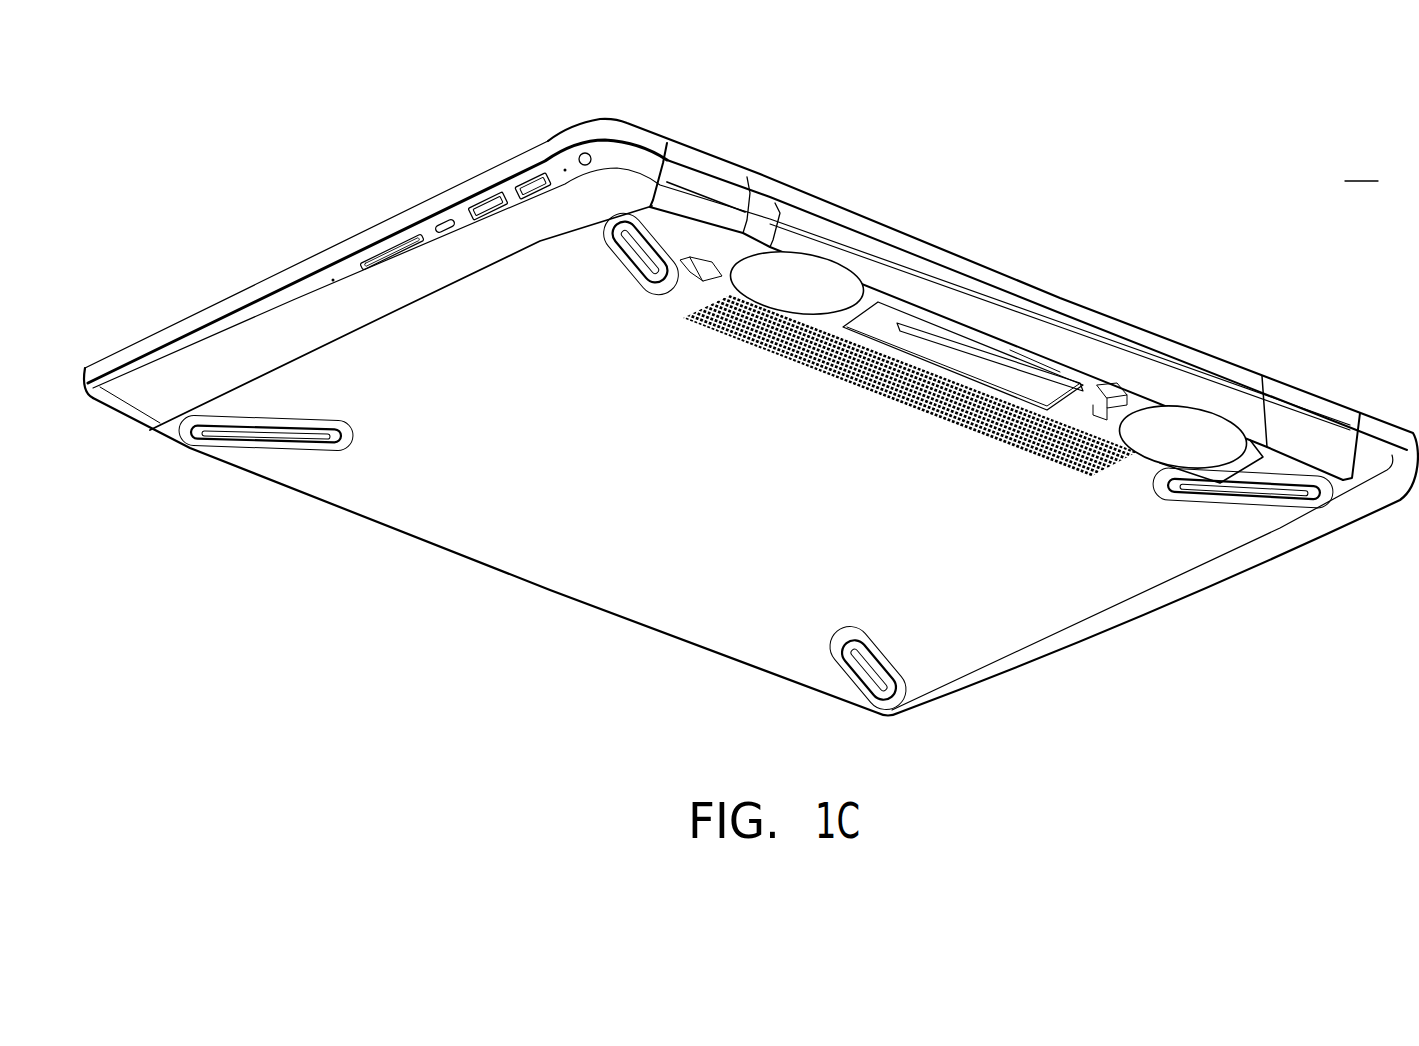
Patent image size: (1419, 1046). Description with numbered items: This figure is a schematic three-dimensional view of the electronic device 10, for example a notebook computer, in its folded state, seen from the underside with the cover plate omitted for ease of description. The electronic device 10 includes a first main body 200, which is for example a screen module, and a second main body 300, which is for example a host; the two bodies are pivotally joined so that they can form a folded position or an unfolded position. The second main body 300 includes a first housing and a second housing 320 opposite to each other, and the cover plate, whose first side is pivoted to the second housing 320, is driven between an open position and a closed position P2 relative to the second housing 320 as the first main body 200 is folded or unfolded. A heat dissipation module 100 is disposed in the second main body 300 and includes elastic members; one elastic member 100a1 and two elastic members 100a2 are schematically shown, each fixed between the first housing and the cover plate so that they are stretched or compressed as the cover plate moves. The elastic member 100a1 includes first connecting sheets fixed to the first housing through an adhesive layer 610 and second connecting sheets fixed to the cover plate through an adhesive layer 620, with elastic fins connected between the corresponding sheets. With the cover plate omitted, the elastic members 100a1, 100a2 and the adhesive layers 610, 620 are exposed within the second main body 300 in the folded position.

The electronic device 10 is at (751, 428).
The first main body 200 is at (497, 175).
The second main body 300 is at (751, 418).
The second housing 320 is at (1157, 565).
The heat dissipation module 100 is at (1022, 305).
The elastic member 100a1 is at (1028, 368).
The elastic members 100a2 is at (803, 287).
The adhesive layer 610 is at (963, 274).
The adhesive layer 620 is at (897, 330).
The closed position P2 is at (1361, 165).